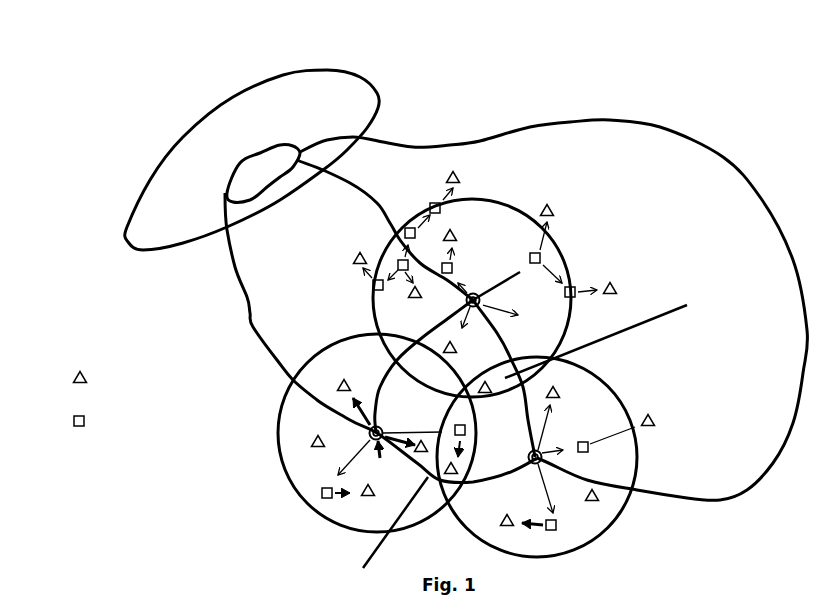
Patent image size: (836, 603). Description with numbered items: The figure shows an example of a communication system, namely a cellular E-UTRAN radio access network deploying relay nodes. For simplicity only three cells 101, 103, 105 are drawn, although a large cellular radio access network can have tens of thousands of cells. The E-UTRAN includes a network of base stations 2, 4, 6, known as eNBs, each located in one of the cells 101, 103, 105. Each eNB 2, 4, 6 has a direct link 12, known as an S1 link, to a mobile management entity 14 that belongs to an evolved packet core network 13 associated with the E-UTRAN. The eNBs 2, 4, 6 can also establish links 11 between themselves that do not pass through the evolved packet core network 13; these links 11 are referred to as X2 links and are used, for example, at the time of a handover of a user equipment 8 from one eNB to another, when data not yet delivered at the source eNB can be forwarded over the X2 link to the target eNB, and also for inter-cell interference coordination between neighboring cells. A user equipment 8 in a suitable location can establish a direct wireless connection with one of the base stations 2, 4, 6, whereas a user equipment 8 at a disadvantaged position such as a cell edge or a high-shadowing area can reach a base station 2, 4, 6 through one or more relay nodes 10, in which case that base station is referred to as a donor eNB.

The base station 2 is at (477, 295).
The base station 4 is at (540, 452).
The base station 6 is at (381, 430).
The user equipment 8 is at (63, 376).
The relay node 10 is at (63, 421).
The link 11 is at (423, 335).
The direct link 12 is at (345, 177).
The evolved packet core network 13 is at (357, 73).
The mobile management entity 14 is at (226, 193).
The cell 101 is at (550, 228).
The cell 103 is at (637, 457).
The cell 105 is at (278, 447).